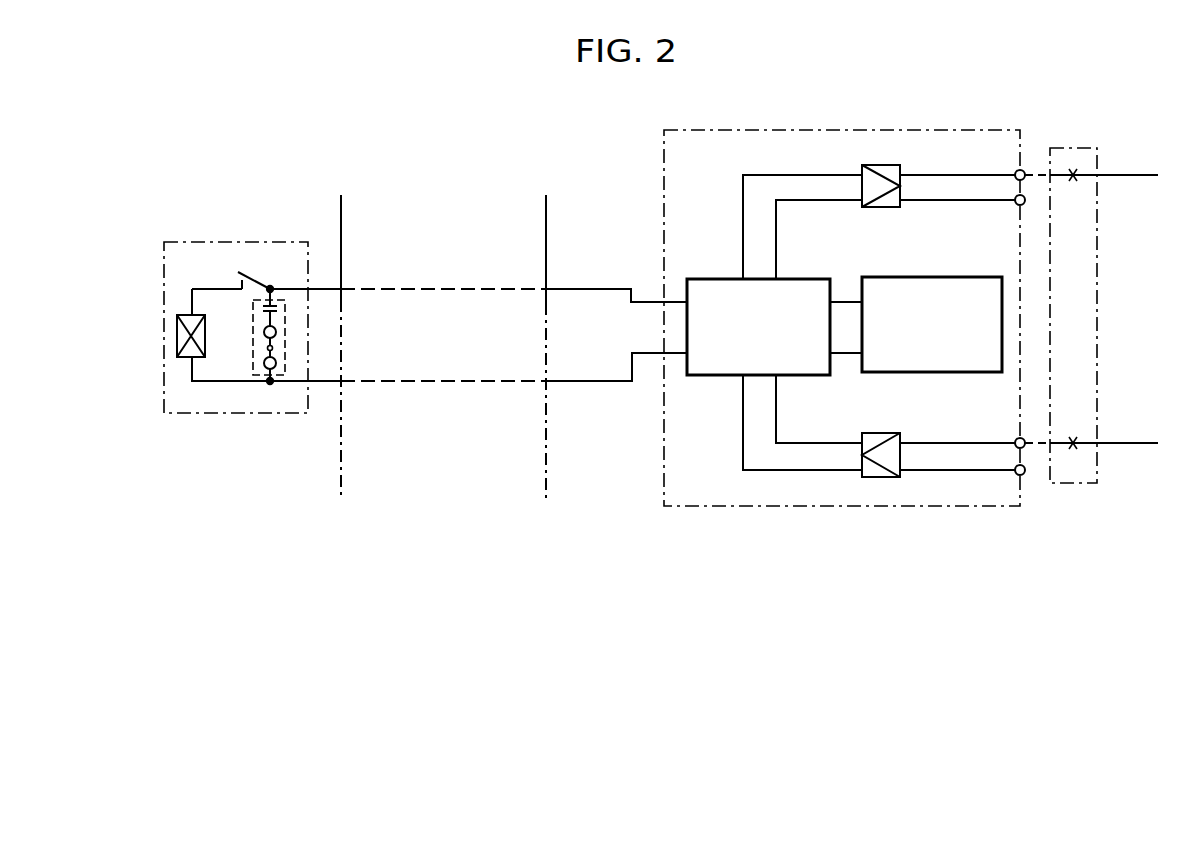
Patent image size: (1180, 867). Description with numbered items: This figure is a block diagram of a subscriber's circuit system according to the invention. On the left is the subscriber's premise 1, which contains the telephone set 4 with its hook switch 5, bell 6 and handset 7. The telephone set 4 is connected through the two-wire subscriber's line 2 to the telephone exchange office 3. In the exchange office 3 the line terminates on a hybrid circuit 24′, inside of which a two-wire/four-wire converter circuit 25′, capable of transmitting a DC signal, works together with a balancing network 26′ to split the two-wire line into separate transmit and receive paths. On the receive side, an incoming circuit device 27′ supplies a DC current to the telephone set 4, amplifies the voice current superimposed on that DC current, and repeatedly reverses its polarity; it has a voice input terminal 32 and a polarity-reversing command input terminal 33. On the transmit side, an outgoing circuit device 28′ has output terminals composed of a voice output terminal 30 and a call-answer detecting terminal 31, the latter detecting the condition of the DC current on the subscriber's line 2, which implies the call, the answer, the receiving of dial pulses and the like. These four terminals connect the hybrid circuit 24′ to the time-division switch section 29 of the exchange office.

The subscriber's premise 1 is at (301, 356).
The subscriber's line 2 is at (443, 403).
The telephone exchange office 3 is at (616, 356).
The telephone set 4 is at (173, 413).
The hook switch 5 is at (257, 277).
The bell 6 is at (253, 320).
The handset 7 is at (213, 312).
The hybrid circuit 24′ is at (677, 507).
The two-wire/four-wire converter circuit 25′ is at (826, 279).
The balancing network 26′ is at (977, 277).
The incoming circuit device 27′ is at (870, 477).
The outgoing circuit device 28′ is at (891, 165).
The time-division switch section 29 is at (1097, 290).
The voice output terminal 30 is at (1024, 168).
The call-answer detecting terminal 31 is at (1024, 203).
The voice input terminal 32 is at (1017, 438).
The polarity-reversing command input terminal 33 is at (1024, 473).